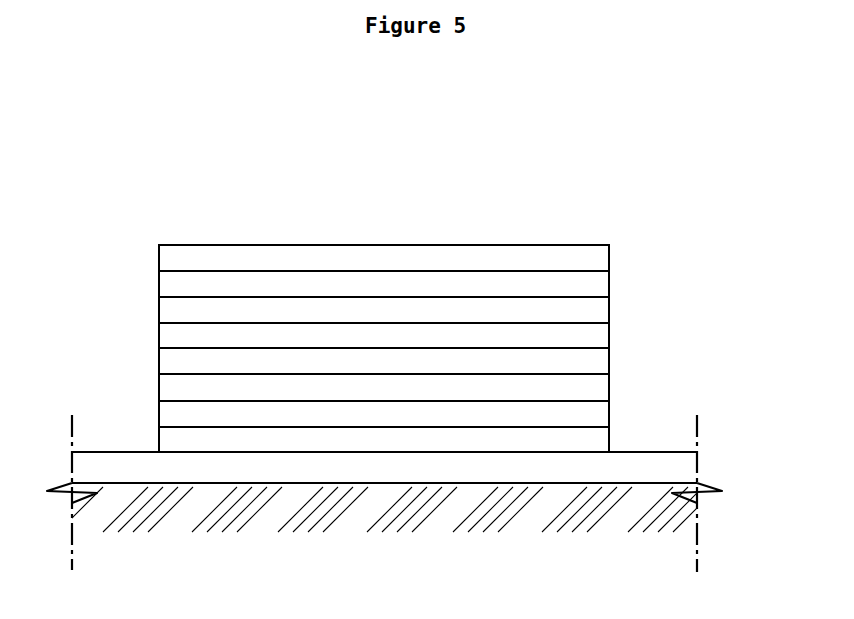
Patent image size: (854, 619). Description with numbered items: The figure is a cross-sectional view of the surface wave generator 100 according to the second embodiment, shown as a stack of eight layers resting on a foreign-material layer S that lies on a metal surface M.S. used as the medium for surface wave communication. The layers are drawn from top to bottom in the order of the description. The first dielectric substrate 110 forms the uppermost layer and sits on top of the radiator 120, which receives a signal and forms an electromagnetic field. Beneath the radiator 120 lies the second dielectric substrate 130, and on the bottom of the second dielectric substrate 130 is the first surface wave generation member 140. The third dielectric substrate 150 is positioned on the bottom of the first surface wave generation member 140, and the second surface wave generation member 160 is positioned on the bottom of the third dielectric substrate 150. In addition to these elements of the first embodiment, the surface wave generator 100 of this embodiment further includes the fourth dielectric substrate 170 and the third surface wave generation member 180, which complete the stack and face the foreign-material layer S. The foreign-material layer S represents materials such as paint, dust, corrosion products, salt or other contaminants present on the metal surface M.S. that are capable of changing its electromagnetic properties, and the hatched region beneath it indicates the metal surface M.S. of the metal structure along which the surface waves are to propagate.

The surface wave generator 100 is at (612, 227).
The first dielectric substrate 110 is at (159, 260).
The radiator 120 is at (609, 284).
The second dielectric substrate 130 is at (159, 311).
The first surface wave generation member 140 is at (609, 336).
The third dielectric substrate 150 is at (159, 362).
The second surface wave generation member 160 is at (609, 388).
The fourth dielectric substrate 170 is at (159, 414).
The third surface wave generation member 180 is at (609, 440).
The foreign-material layer S is at (549, 469).
The metal surface M.S. is at (650, 483).